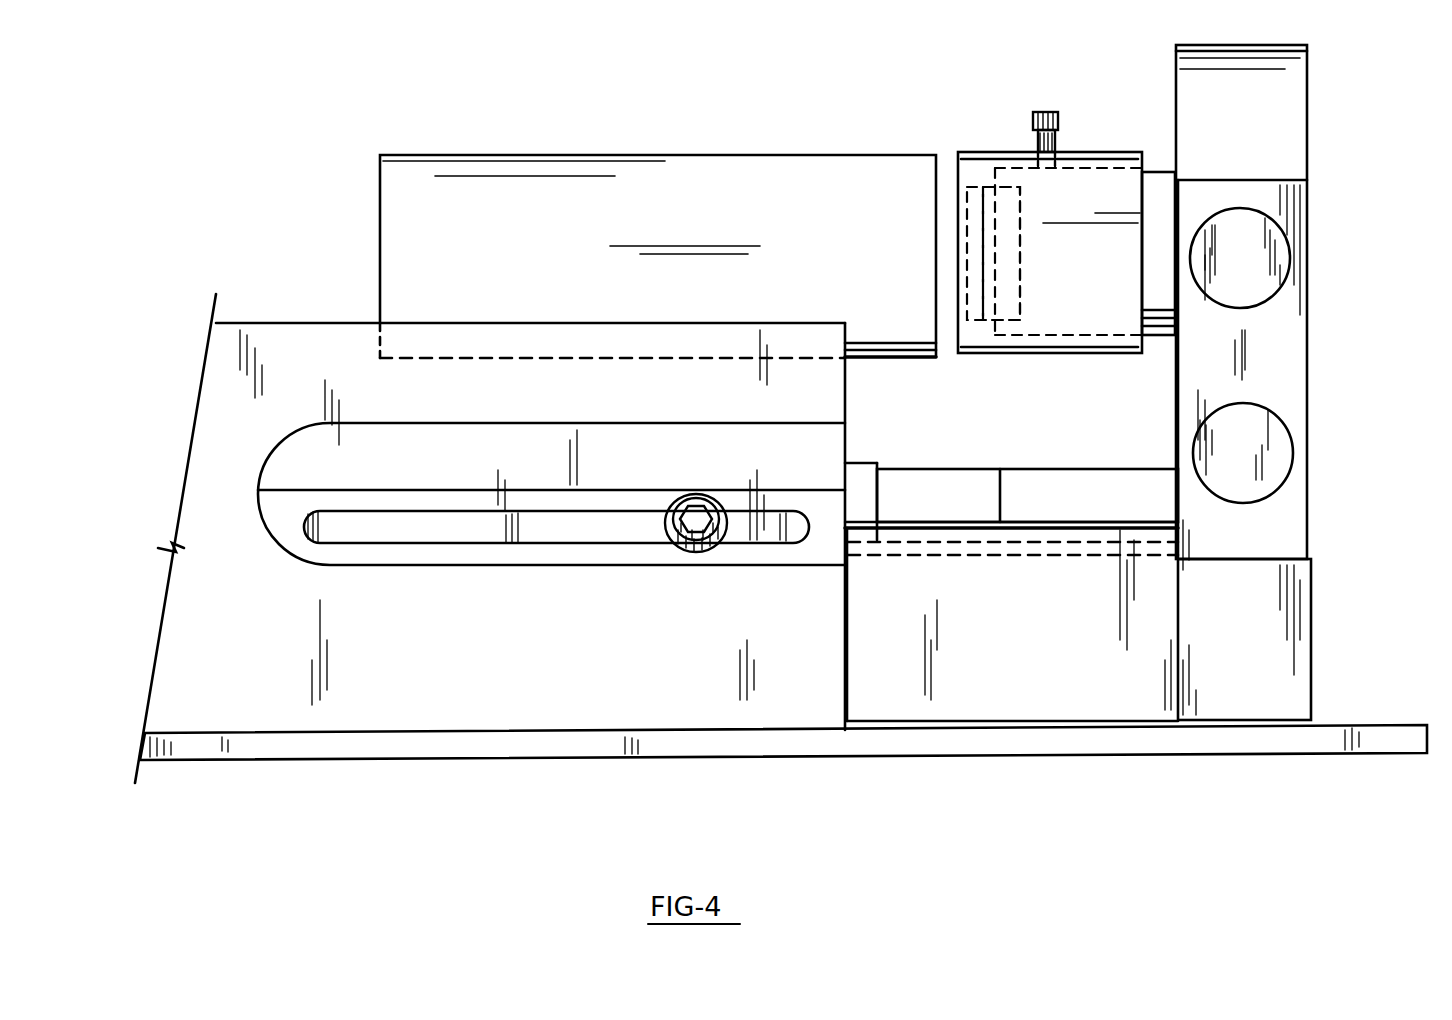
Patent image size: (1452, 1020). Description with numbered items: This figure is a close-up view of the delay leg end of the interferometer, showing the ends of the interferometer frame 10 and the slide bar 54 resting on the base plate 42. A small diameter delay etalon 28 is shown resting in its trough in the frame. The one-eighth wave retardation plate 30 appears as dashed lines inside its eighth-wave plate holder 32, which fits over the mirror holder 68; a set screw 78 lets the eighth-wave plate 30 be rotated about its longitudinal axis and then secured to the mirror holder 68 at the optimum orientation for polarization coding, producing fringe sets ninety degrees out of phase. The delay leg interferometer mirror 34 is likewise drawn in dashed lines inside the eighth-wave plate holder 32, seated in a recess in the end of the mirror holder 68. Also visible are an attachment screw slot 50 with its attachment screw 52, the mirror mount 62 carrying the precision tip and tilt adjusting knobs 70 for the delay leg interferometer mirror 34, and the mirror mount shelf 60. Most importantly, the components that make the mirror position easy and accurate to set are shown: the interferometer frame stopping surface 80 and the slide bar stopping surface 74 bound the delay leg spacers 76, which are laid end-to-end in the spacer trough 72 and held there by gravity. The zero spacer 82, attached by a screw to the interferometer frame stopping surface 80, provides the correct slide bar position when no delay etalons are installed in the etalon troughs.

The interferometer frame 10 is at (404, 710).
The delay etalon 28 is at (485, 158).
The one-eighth wave retardation plate 30 is at (973, 238).
The eighth-wave plate holder 32 is at (1003, 151).
The delay leg interferometer mirror 34 is at (1005, 231).
The base plate 42 is at (1382, 732).
The attachment screw slot 50 is at (445, 541).
The attachment screw 52 is at (681, 558).
The slide bar 54 is at (885, 703).
The mirror mount shelf 60 is at (1294, 608).
The mirror mount 62 is at (1308, 137).
The mirror holder 68 is at (1160, 182).
The precision tip and tilt adjusting knobs 70 is at (1281, 440).
The spacer trough 72 is at (1083, 556).
The slide bar stopping surface 74 is at (1177, 437).
The delay leg spacers 76 is at (1047, 512).
The set screw 78 is at (1036, 112).
The interferometer frame stopping surface 80 is at (846, 436).
The zero spacer 82 is at (872, 468).